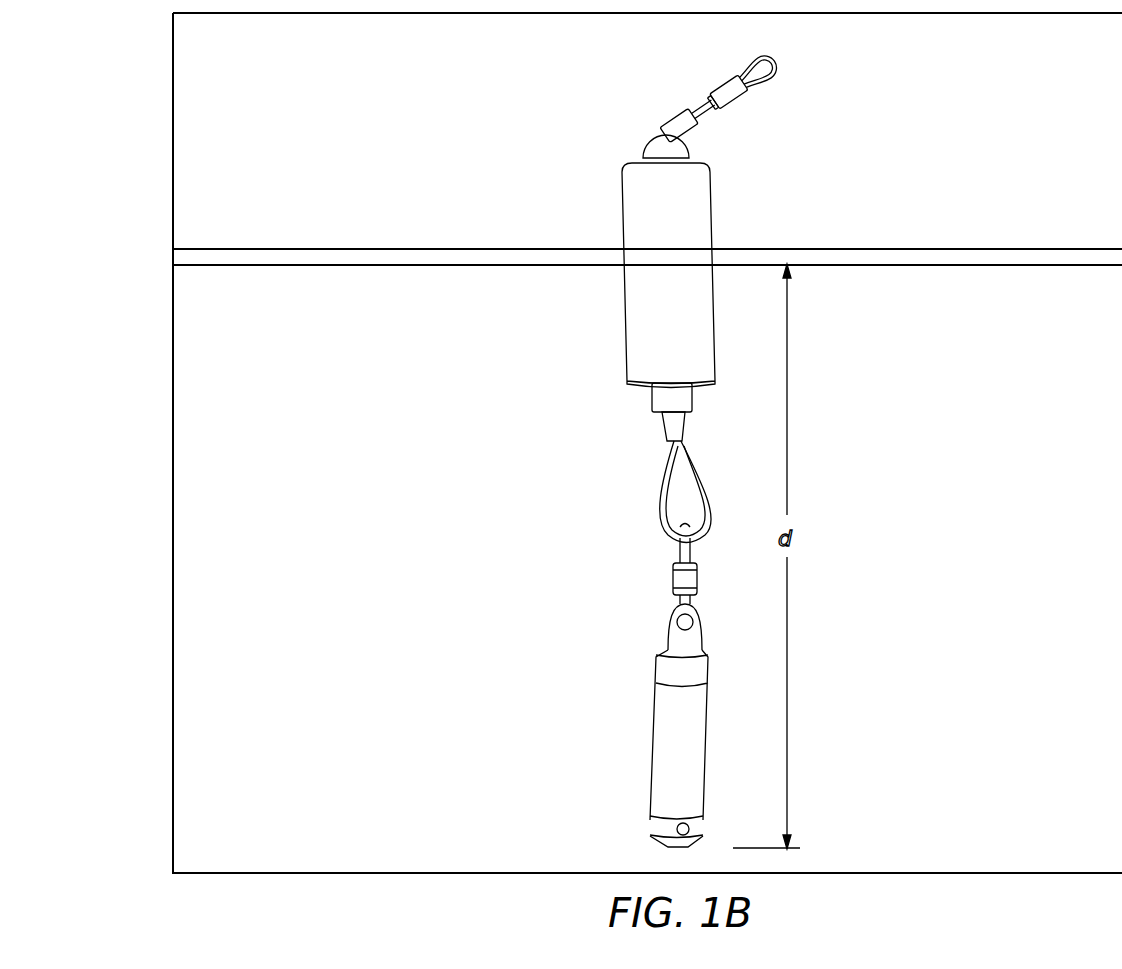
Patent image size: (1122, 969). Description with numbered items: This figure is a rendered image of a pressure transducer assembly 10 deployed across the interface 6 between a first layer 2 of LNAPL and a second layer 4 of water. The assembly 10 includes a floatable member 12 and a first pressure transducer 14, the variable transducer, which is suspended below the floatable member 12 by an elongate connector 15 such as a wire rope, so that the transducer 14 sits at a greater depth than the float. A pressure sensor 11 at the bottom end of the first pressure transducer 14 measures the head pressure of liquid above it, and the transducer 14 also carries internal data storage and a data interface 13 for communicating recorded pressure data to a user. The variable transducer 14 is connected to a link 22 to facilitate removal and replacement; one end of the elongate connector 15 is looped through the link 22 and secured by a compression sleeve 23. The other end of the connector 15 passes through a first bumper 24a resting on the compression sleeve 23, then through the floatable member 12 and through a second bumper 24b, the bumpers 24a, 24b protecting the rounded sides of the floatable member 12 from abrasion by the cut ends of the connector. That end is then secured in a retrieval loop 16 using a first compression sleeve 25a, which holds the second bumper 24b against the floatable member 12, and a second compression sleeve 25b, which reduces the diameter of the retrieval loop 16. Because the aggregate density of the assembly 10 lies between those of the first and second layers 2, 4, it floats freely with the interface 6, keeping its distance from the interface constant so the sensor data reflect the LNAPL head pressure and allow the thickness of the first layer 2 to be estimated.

The first layer 2 is at (937, 220).
The second layer 4 is at (970, 380).
The interface 6 is at (417, 258).
The pressure transducer assembly 10 is at (508, 124).
The pressure sensor 11 is at (655, 825).
The floatable member 12 is at (648, 320).
The data interface 13 is at (677, 672).
The first pressure transducer 14 is at (593, 742).
The elongate connector 15 is at (664, 496).
The retrieval loop 16 is at (762, 80).
The link 22 is at (680, 582).
The compression sleeve 23 is at (672, 430).
The first bumper 24a is at (657, 398).
The second bumper 24b is at (662, 150).
The first compression sleeve 25a is at (680, 127).
The second compression sleeve 25b is at (727, 92).